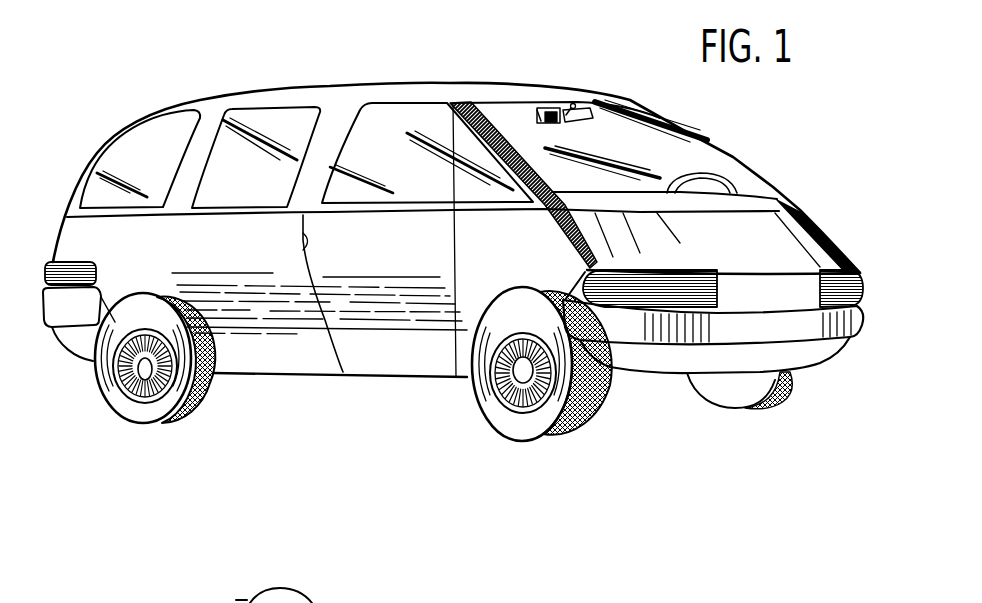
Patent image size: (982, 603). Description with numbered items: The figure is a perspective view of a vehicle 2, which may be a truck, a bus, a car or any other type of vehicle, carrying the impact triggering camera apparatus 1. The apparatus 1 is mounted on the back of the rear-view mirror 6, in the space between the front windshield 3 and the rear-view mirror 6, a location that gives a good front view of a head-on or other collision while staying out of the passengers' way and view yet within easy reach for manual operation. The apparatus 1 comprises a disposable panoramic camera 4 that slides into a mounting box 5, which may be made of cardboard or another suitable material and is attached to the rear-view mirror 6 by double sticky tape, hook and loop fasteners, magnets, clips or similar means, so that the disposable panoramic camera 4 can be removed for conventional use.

The impact triggering camera apparatus 1 is at (540, 122).
The vehicle 2 is at (526, 88).
The front windshield 3 is at (705, 159).
The disposable panoramic camera 4 is at (562, 123).
The mounting box 5 is at (537, 113).
The rear-view mirror 6 is at (593, 110).